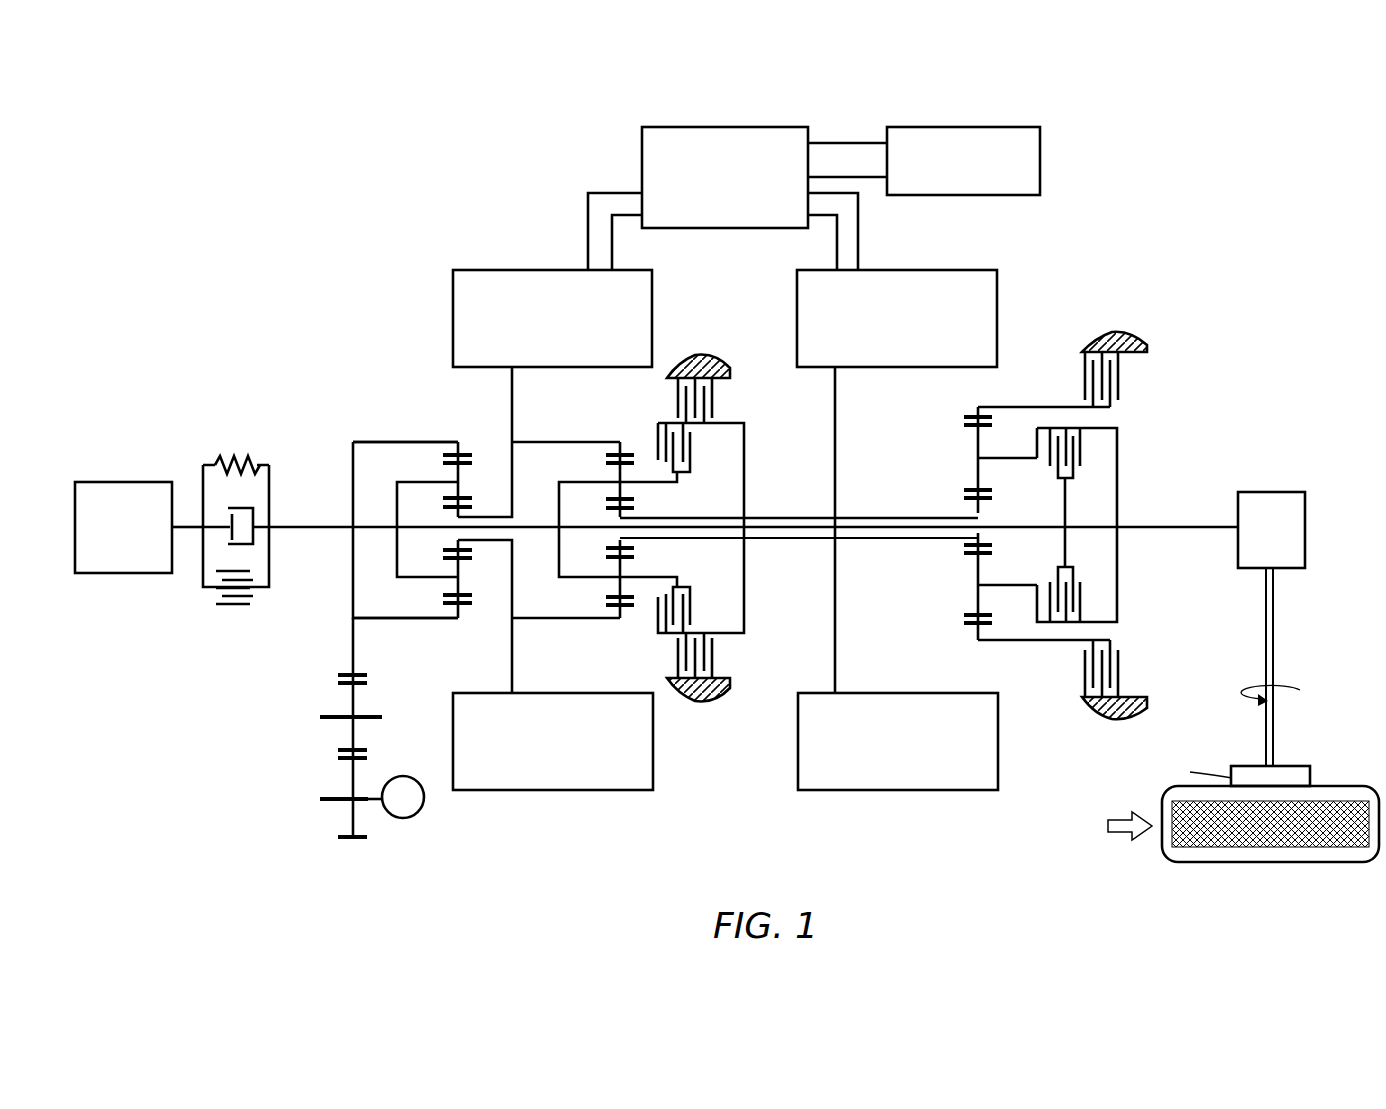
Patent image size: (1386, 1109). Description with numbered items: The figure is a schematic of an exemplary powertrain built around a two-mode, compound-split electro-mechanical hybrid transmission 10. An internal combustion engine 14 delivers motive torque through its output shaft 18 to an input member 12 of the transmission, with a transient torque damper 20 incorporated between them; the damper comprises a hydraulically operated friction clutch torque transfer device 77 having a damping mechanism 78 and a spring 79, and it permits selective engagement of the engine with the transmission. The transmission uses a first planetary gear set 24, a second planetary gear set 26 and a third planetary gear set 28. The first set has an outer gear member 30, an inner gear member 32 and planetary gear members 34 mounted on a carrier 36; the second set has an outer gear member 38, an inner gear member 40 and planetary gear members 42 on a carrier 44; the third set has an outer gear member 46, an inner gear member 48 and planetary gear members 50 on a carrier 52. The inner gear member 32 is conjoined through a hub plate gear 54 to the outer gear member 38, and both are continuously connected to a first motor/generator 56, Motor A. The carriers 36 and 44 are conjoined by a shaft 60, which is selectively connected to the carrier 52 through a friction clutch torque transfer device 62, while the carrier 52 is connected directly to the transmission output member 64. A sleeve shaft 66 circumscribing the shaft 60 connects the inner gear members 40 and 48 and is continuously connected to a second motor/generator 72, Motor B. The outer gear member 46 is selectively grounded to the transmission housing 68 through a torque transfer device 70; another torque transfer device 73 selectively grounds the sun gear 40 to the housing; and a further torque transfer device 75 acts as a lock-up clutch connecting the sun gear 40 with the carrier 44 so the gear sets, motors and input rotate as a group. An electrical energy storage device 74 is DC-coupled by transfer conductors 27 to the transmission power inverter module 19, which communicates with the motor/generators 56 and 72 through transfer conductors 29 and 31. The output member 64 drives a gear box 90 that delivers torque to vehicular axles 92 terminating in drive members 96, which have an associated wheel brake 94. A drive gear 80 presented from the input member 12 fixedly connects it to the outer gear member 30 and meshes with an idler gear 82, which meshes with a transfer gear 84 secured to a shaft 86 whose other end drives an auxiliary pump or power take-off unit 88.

The hybrid transmission 10 is at (408, 228).
The input member 12 is at (333, 520).
The internal combustion engine 14 is at (130, 482).
The output shaft of the engine 18 is at (196, 520).
The transmission power inverter module 19 is at (642, 145).
The transient torque damper 20 is at (222, 385).
The first planetary gear set 24 is at (445, 432).
The second planetary gear set 26 is at (614, 432).
The transfer conductors 27 is at (847, 142).
The third planetary gear set 28 is at (972, 402).
The transfer conductors 29 is at (588, 228).
The outer gear member of the first planetary gear set 30 is at (465, 456).
The transfer conductors 31 is at (858, 228).
The inner gear member of the first planetary gear set 32 is at (460, 512).
The planetary gear members of the first planetary gear set 34 is at (458, 478).
The carrier of the first planetary gear set 36 is at (397, 548).
The outer gear member of the second planetary gear set 38 is at (628, 456).
The inner gear member of the second planetary gear set 40 is at (636, 515).
The planetary gear members of the second planetary gear set 42 is at (620, 478).
The carrier of the second planetary gear set 44 is at (556, 580).
The outer gear member of the third planetary gear set 46 is at (965, 418).
The inner gear member of the third planetary gear set 48 is at (965, 496).
The planetary gear members of the third planetary gear set 50 is at (972, 444).
The carrier of the third planetary gear set 52 is at (1117, 436).
The hub plate gear 54 is at (512, 500).
The first motor/generator 56 is at (453, 305).
The shaft 60 is at (810, 527).
The torque transfer device 62 is at (1092, 470).
The transmission output member 64 is at (1213, 527).
The sleeve shaft 66 is at (782, 518).
The transmission housing 68 is at (697, 372).
The torque transfer device 70 is at (1072, 372).
The second motor/generator 72 is at (997, 285).
The torque transfer device 73 is at (725, 400).
The electrical energy storage device 74 is at (1040, 148).
The torque transfer device 75 is at (700, 460).
The torque transfer device 77 is at (207, 600).
The damping mechanism 78 is at (248, 510).
The spring 79 is at (230, 460).
The drive gear 80 is at (352, 592).
The idler gear 82 is at (345, 708).
The transfer gear 84 is at (345, 817).
The shaft 86 is at (370, 803).
The auxiliary hydraulic/transmission fluid pump and/or power take-off unit 88 is at (420, 818).
The gear box 90 is at (1232, 553).
The vehicular axles 92 is at (1278, 645).
The wheel brake 94 is at (1312, 776).
The drive members 96 is at (1195, 855).